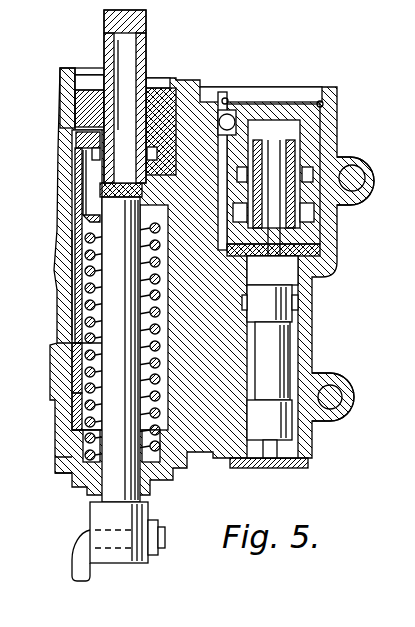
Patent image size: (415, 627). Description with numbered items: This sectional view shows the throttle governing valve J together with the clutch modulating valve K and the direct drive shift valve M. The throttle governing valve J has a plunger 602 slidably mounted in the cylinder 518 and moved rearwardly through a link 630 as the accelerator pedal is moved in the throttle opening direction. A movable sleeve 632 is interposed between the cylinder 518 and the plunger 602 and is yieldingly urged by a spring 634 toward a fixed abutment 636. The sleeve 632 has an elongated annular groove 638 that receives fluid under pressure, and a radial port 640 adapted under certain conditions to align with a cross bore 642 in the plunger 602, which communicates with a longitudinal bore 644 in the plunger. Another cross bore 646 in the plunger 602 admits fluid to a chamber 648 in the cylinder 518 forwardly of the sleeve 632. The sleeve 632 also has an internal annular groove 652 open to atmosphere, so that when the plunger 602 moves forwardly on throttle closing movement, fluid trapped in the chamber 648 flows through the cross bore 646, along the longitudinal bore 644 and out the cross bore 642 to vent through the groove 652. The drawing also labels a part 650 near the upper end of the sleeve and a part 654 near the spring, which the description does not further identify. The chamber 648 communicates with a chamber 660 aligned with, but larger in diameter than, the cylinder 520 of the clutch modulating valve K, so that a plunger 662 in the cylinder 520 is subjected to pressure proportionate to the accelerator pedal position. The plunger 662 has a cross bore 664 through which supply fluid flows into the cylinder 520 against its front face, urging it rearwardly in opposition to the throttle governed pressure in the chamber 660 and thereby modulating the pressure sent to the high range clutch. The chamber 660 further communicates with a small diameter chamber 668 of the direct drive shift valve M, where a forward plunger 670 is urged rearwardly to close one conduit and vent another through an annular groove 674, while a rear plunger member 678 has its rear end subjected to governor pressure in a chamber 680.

The cylinder 518 is at (80, 343).
The cylinder 520 is at (296, 130).
The plunger 602 is at (102, 415).
The link 630 is at (90, 540).
The movable sleeve 632 is at (74, 266).
The spring 634 is at (85, 357).
The fixed abutment 636 is at (150, 89).
The elongated annular groove 638 is at (74, 192).
The radial port 640 is at (145, 186).
The cross bore 642 is at (110, 178).
The longitudinal bore 644 is at (130, 46).
The cross bore 646 is at (72, 90).
The chamber 648 is at (122, 130).
The retainer 650 is at (84, 209).
The internal annular groove 652 is at (82, 147).
The ring 654 is at (76, 381).
The chamber 660 is at (308, 250).
The plunger 662 is at (302, 229).
The cross bore 664 is at (302, 206).
The chamber 668 is at (285, 270).
The forward plunger 670 is at (287, 290).
The annular groove 674 is at (290, 347).
The rear plunger member 678 is at (293, 428).
The chamber 680 is at (289, 459).
The throttle governing valve J is at (77, 71).
The clutch modulating valve K is at (326, 160).
The direct drive shift valve M is at (301, 367).